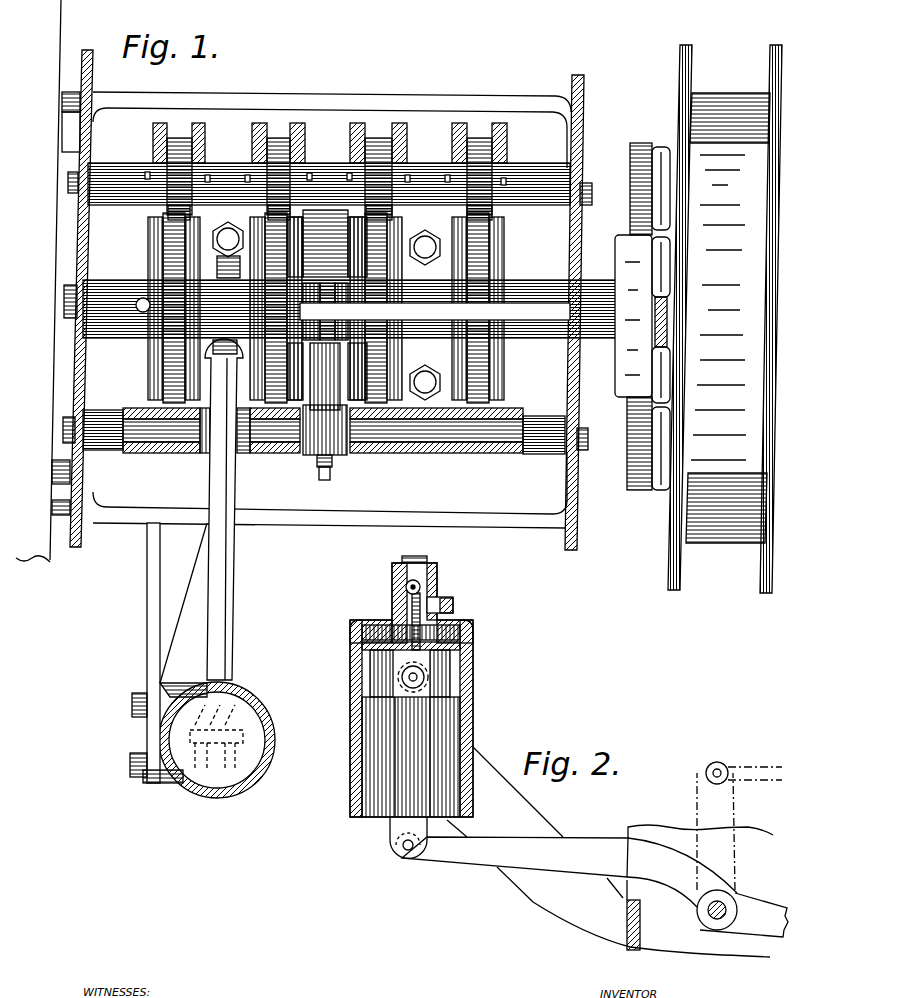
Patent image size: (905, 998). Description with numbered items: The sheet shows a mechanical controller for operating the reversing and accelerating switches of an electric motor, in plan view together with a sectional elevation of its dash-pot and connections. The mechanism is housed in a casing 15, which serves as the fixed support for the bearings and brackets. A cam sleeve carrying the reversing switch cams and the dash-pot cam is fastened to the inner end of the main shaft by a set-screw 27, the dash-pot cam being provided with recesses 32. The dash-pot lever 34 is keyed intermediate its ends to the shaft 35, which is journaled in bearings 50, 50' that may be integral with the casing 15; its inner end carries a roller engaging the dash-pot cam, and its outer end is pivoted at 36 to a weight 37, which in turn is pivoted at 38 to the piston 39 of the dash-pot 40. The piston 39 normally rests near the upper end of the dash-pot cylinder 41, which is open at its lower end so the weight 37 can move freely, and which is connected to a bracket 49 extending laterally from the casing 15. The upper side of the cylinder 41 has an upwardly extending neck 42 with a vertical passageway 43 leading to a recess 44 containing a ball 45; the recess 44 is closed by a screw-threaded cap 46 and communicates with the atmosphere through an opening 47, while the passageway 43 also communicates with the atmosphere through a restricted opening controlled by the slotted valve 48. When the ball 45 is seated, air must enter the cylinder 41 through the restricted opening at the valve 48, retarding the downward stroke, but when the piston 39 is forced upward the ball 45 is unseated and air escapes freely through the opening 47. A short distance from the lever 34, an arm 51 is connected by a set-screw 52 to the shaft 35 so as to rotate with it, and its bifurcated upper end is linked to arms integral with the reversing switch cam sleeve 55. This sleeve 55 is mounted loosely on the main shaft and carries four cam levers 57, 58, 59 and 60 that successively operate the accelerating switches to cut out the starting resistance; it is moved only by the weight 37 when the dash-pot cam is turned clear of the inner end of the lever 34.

In FIG. 1, the casing 15 is at (107, 510).
In FIG. 1, the set-screw 27 is at (140, 296).
In FIG. 1, the recesses 32 is at (236, 232).
In FIG. 1, the lever 34 is at (213, 470).
In FIG. 2, the lever 34 is at (573, 848).
In FIG. 1, the shaft 35 is at (263, 453).
In FIG. 2, the shaft 35 is at (722, 900).
In FIG. 2, the pivot 36 is at (408, 850).
In FIG. 2, the weight 37 is at (393, 803).
In FIG. 2, the pivot 38 is at (424, 675).
In FIG. 2, the piston 39 is at (467, 643).
In FIG. 2, the dash-pot 40 is at (348, 645).
In FIG. 2, the dash-pot cylinder 41 is at (473, 710).
In FIG. 2, the neck 42 is at (392, 595).
In FIG. 2, the passageway 43 is at (412, 608).
In FIG. 2, the recess 44 is at (430, 572).
In FIG. 2, the ball 45 is at (433, 594).
In FIG. 2, the screw-threaded cap 46 is at (427, 560).
In FIG. 2, the opening 47 is at (430, 585).
In FIG. 2, the slotted valve 48 is at (450, 610).
In FIG. 1, the bracket 49 is at (150, 657).
In FIG. 2, the bracket 49 is at (522, 812).
In FIG. 1, the bearing 50 is at (93, 414).
In FIG. 1, the bearing 50' is at (555, 421).
In FIG. 1, the arm 51 is at (335, 440).
In FIG. 1, the set-screw 52 is at (323, 480).
In FIG. 1, the reversing switch cam sleeve 55 is at (510, 298).
In FIG. 1, the cam lever 57 is at (373, 365).
In FIG. 1, the cam lever 58 is at (377, 268).
In FIG. 1, the cam lever 59 is at (477, 382).
In FIG. 1, the cam lever 60 is at (477, 255).